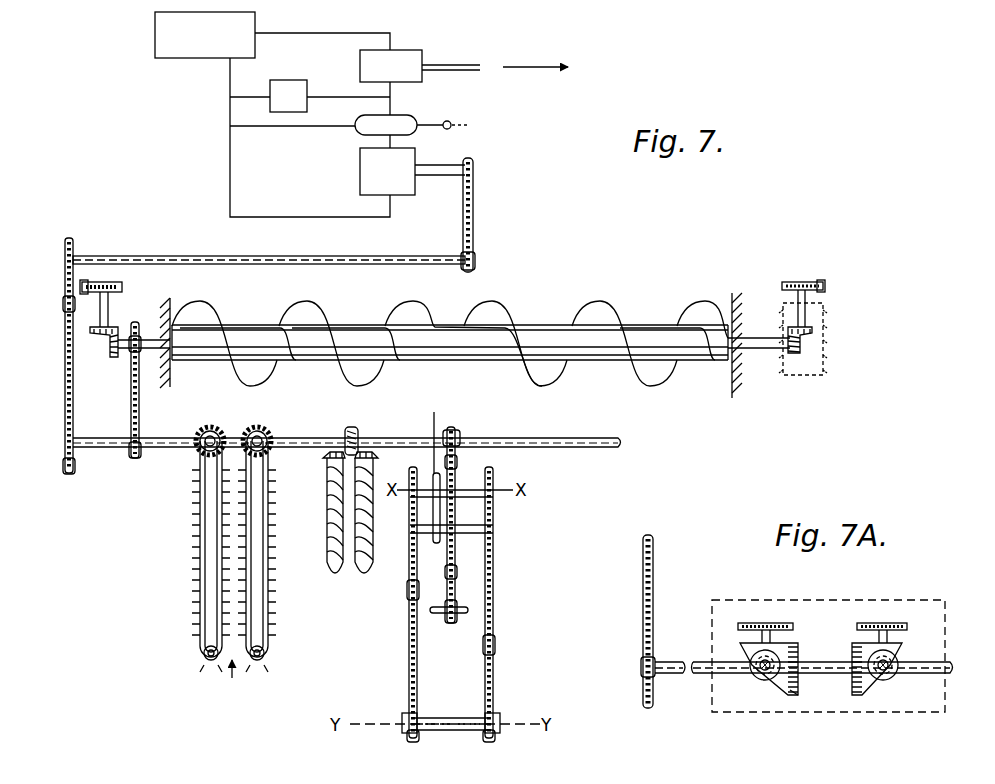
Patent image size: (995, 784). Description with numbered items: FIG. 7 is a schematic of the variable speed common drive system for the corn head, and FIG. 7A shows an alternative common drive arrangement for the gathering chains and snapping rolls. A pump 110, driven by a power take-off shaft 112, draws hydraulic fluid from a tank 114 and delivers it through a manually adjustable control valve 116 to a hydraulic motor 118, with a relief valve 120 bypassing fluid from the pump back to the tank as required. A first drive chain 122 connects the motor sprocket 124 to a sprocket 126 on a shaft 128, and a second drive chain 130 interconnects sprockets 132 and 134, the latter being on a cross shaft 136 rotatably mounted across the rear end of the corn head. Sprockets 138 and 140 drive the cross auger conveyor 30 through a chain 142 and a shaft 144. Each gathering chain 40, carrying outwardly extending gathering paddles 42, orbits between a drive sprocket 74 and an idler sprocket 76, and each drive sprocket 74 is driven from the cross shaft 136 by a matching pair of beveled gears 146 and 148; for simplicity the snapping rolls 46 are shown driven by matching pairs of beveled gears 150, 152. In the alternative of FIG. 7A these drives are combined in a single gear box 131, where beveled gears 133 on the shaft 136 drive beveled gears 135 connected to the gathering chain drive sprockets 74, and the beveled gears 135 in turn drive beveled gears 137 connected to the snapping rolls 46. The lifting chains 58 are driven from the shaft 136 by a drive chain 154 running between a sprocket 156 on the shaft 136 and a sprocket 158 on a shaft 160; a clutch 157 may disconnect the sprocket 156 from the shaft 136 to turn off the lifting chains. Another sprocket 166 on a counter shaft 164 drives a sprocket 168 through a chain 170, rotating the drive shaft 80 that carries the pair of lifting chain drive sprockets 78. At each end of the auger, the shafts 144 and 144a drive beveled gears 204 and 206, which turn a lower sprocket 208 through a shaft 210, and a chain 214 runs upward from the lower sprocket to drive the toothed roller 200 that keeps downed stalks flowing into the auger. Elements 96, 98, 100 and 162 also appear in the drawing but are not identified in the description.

In FIG. 7, the cross auger conveyor 30 is at (557, 325).
In FIG. 7, the gathering chain 40 is at (237, 683).
In FIG. 7A, the gathering chain 40 is at (792, 625).
In FIG. 7, the gathering paddle 42 is at (192, 612).
In FIG. 7, the snapping roll 46 is at (360, 580).
In FIG. 7A, the snapping roll 46 is at (762, 678).
In FIG. 7, the lifting chain 58 is at (408, 590).
In FIG. 7, the drive sprocket 74 is at (206, 424).
In FIG. 7A, the drive sprocket 74 is at (764, 623).
In FIG. 7, the idler sprocket 76 is at (204, 662).
In FIG. 7, the lifting chain drive sprocket 78 is at (411, 467).
In FIG. 7, the drive shaft 80 is at (470, 499).
In FIG. 7, the lower sprocket 96 is at (408, 740).
In FIG. 7, the cross shaft 98 is at (450, 718).
In FIG. 7, the bearing 100 is at (404, 713).
In FIG. 7, the pump 110 is at (395, 50).
In FIG. 7, the power take-off shaft 112 is at (470, 62).
In FIG. 7, the tank 114 is at (185, 58).
In FIG. 7, the control valve 116 is at (362, 134).
In FIG. 7, the hydraulic motor 118 is at (402, 195).
In FIG. 7, the relief valve 120 is at (290, 80).
In FIG. 7, the first drive chain 122 is at (474, 212).
In FIG. 7, the motor sprocket 124 is at (474, 170).
In FIG. 7, the sprocket 126 is at (476, 270).
In FIG. 7, the shaft 128 is at (392, 265).
In FIG. 7, the second drive chain 130 is at (63, 304).
In FIG. 7A, the second drive chain 130 is at (654, 556).
In FIG. 7A, the gear box 131 is at (716, 598).
In FIG. 7, the sprocket 132 is at (68, 238).
In FIG. 7A, the beveled gear 133 is at (812, 694).
In FIG. 7, the sprocket 134 is at (66, 474).
In FIG. 7A, the sprocket 134 is at (652, 640).
In FIG. 7A, the beveled gear 135 is at (745, 646).
In FIG. 7, the cross shaft 136 is at (617, 438).
In FIG. 7A, the cross shaft 136 is at (705, 675).
In FIG. 7A, the beveled gear 137 is at (772, 682).
In FIG. 7, the sprocket 138 is at (135, 458).
In FIG. 7, the sprocket 140 is at (135, 322).
In FIG. 7, the chain 142 is at (129, 402).
In FIG. 7, the shaft 144 is at (172, 322).
In FIG. 7, the shaft 144a is at (758, 335).
In FIG. 7, the beveled gear 146 is at (195, 438).
In FIG. 7, the beveled gear 148 is at (243, 428).
In FIG. 7, the beveled gear 150 is at (328, 470).
In FIG. 7, the beveled gear 152 is at (346, 430).
In FIG. 7, the drive chain 154 is at (457, 463).
In FIG. 7, the sprocket 156 is at (453, 428).
In FIG. 7, the clutch 157 is at (461, 438).
In FIG. 7, the sprocket 158 is at (451, 624).
In FIG. 7, the shaft 160 is at (432, 612).
In FIG. 7, the sprocket 162 is at (457, 576).
In FIG. 7, the counter shaft 164 is at (470, 534).
In FIG. 7, the sprocket 166 is at (436, 545).
In FIG. 7, the sprocket 168 is at (433, 434).
In FIG. 7, the chain 170 is at (432, 502).
In FIG. 7, the roller 200 is at (824, 372).
In FIG. 7, the beveled gear 204 is at (115, 350).
In FIG. 7, the beveled gear 206 is at (92, 338).
In FIG. 7, the lower sprocket 208 is at (103, 282).
In FIG. 7, the shaft 210 is at (806, 300).
In FIG. 7, the chain 214 is at (118, 285).